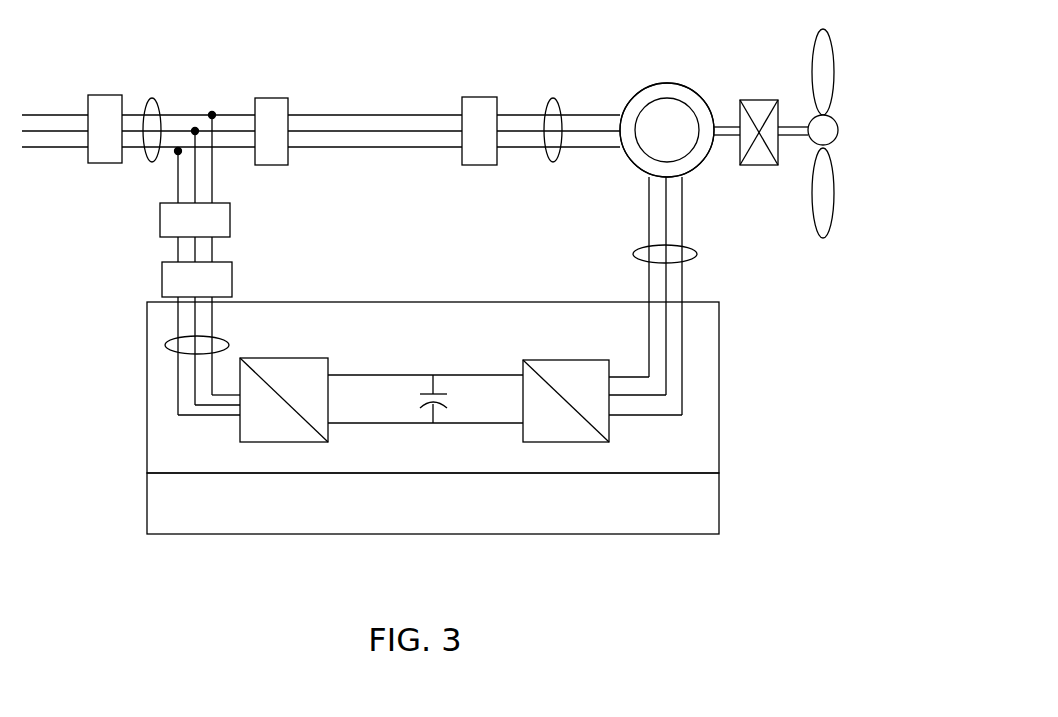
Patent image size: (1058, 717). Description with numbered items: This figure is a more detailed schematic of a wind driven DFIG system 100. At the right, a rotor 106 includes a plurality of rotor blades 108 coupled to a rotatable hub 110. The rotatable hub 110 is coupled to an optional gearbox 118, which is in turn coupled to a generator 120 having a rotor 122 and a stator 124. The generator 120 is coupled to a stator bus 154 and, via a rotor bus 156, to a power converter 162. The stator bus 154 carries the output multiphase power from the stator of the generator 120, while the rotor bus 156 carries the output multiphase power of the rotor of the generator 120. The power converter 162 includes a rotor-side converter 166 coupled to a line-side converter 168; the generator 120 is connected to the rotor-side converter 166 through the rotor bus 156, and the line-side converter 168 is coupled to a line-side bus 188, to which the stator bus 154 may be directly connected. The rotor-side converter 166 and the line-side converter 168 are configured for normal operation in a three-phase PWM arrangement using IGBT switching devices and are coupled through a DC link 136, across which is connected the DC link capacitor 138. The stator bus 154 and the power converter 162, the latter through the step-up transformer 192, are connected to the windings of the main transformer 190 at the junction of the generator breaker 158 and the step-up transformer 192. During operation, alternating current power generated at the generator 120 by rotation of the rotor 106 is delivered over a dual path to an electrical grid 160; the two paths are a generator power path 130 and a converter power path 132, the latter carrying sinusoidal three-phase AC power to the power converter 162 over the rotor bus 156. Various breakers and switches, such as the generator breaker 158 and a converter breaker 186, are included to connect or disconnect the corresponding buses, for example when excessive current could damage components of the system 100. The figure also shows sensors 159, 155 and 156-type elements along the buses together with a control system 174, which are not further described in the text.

The DFIG system 100 is at (366, 41).
The rotor 106 is at (881, 97).
The rotor blades 108 is at (834, 82).
The rotatable hub 110 is at (838, 133).
The gearbox 118 is at (757, 100).
The generator 120 is at (663, 75).
The rotor 122 is at (690, 107).
The stator 124 is at (645, 90).
The generator power path 130 is at (416, 97).
The converter power path 132 is at (622, 210).
The DC link 136 is at (448, 374).
The DC link capacitor 138 is at (426, 382).
The stator bus 154 is at (556, 98).
The stator contactor / breaker 155 is at (493, 97).
The rotor bus 156 is at (697, 254).
The generator breaker 158 is at (284, 98).
The line current sensor 159 is at (153, 98).
The electrical grid 160 is at (35, 98).
The power converter 162 is at (147, 388).
The rotor-side converter 166 is at (609, 440).
The line-side converter 168 is at (240, 440).
The control system 174 is at (719, 523).
The converter breaker 186 is at (162, 280).
The line-side bus 188 is at (165, 345).
The main transformer 190 is at (112, 95).
The step-up transformer 192 is at (160, 220).